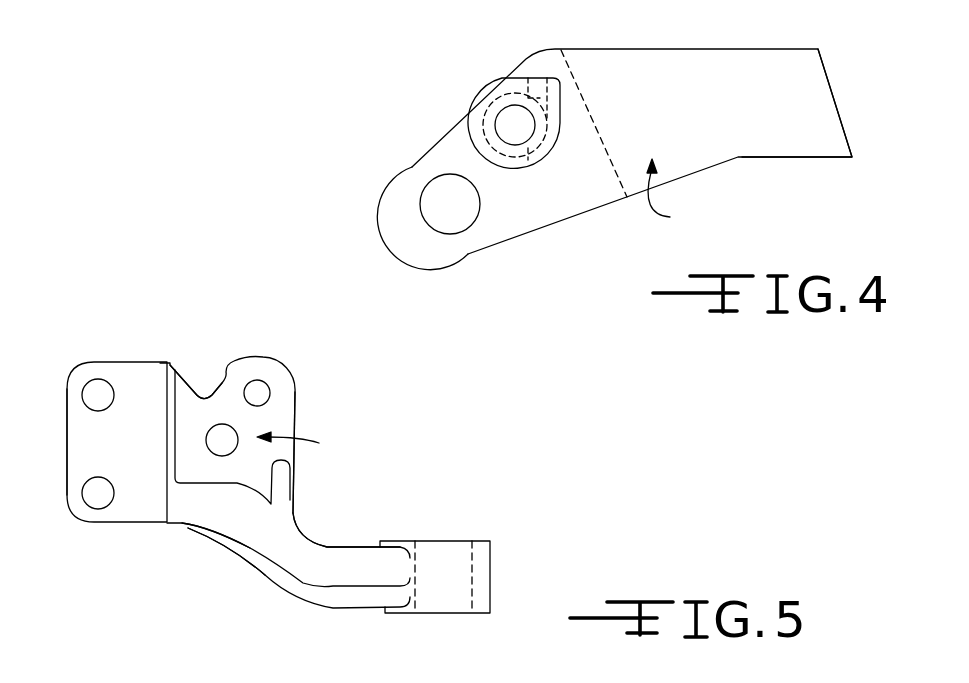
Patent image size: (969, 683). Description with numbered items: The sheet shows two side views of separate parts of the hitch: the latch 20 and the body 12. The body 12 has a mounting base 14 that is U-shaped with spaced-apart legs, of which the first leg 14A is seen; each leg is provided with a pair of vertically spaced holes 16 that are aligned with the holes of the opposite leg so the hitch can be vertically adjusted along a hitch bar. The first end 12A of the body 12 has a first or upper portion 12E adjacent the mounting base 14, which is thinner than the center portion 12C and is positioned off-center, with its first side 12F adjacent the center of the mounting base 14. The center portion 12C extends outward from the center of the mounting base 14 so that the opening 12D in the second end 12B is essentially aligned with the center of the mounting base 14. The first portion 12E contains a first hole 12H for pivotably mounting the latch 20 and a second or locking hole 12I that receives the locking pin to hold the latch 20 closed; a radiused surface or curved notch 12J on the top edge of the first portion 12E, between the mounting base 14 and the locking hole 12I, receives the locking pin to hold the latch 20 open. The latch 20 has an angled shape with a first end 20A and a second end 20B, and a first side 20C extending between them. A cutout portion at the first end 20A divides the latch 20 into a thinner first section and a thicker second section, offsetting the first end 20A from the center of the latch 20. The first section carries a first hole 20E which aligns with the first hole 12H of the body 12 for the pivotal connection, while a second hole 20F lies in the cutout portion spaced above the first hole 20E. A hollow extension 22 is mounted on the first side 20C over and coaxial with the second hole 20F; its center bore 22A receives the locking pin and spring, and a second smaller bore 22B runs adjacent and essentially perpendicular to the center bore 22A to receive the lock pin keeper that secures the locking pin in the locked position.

In FIG. 5, the body 12 is at (333, 608).
In FIG. 5, the first end of the body 12A is at (180, 526).
In FIG. 5, the second end of the body 12B is at (483, 568).
In FIG. 5, the center portion of the body 12C is at (322, 547).
In FIG. 5, the opening 12D is at (447, 547).
In FIG. 5, the first portion of the body 12E is at (282, 420).
In FIG. 5, the first side of the first portion 12F is at (310, 444).
In FIG. 5, the first hole of the body 12H is at (230, 445).
In FIG. 5, the second or locking hole 12I is at (260, 390).
In FIG. 5, the radiused surface or curved notch 12J is at (205, 399).
In FIG. 5, the mounting base 14 is at (142, 518).
In FIG. 5, the first leg of the mounting base 14A is at (85, 457).
In FIG. 5, the holes 16 is at (90, 390).
In FIG. 4, the latch 20 is at (678, 49).
In FIG. 4, the first end of the latch 20A is at (407, 217).
In FIG. 4, the second end of the latch 20B is at (832, 107).
In FIG. 4, the first side of the latch 20C is at (682, 193).
In FIG. 4, the first hole of the latch 20E is at (460, 220).
In FIG. 4, the second hole of the latch 20F is at (538, 45).
In FIG. 4, the hollow extension 22 is at (513, 168).
In FIG. 4, the center bore 22A is at (525, 130).
In FIG. 4, the second smaller bore 22B is at (569, 84).